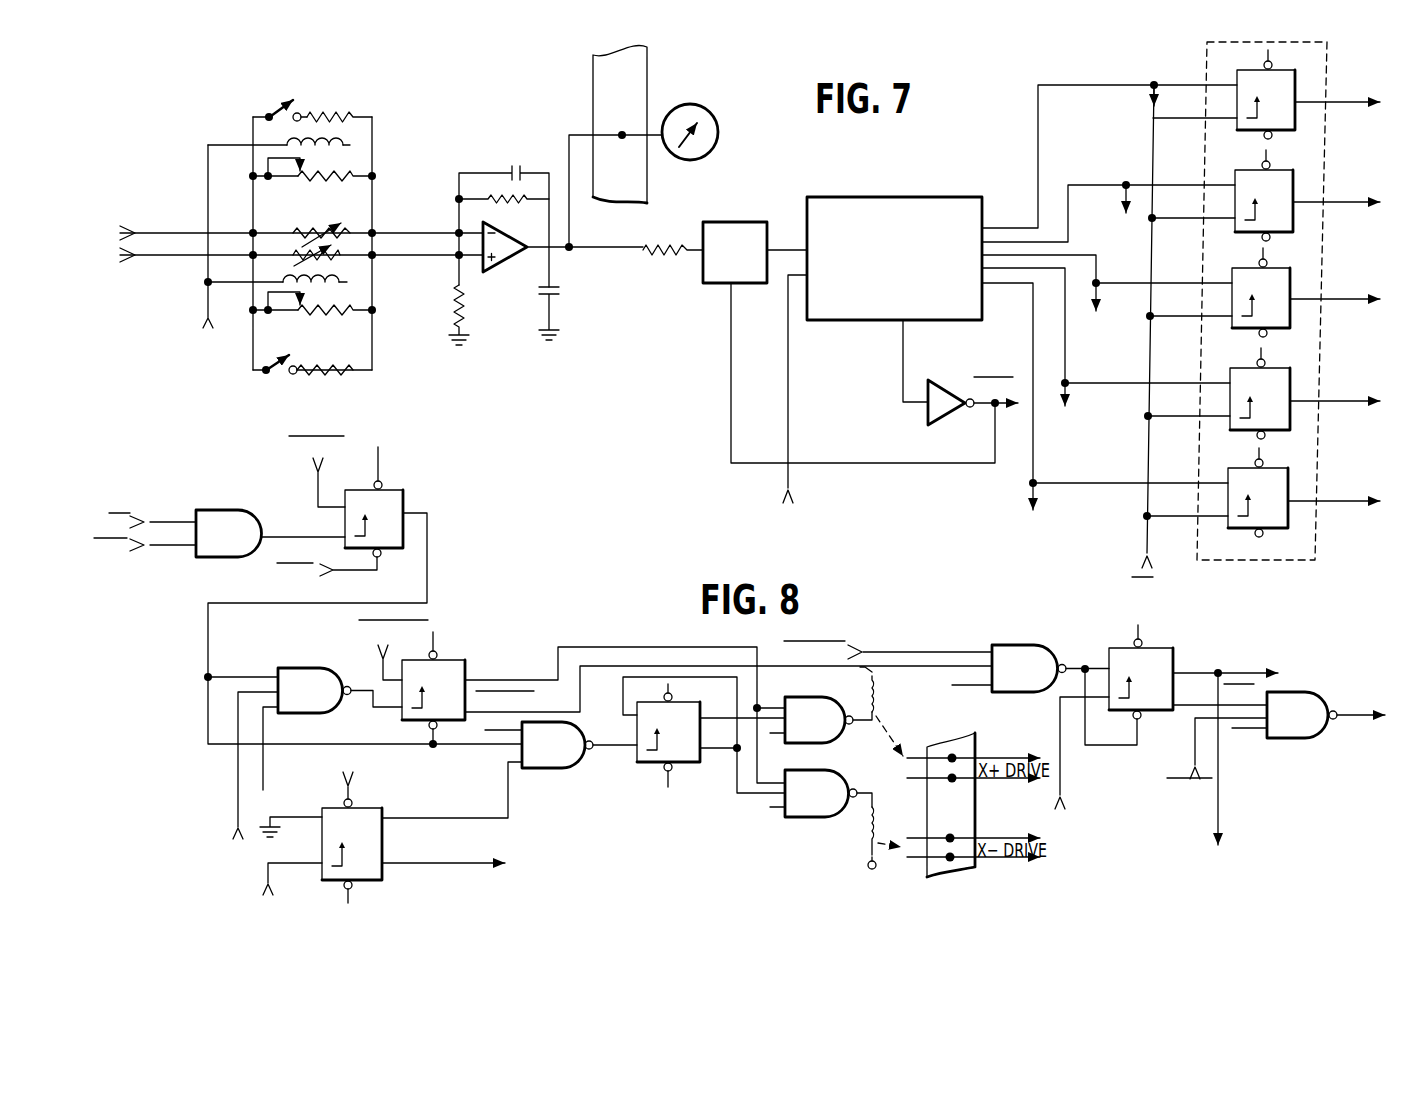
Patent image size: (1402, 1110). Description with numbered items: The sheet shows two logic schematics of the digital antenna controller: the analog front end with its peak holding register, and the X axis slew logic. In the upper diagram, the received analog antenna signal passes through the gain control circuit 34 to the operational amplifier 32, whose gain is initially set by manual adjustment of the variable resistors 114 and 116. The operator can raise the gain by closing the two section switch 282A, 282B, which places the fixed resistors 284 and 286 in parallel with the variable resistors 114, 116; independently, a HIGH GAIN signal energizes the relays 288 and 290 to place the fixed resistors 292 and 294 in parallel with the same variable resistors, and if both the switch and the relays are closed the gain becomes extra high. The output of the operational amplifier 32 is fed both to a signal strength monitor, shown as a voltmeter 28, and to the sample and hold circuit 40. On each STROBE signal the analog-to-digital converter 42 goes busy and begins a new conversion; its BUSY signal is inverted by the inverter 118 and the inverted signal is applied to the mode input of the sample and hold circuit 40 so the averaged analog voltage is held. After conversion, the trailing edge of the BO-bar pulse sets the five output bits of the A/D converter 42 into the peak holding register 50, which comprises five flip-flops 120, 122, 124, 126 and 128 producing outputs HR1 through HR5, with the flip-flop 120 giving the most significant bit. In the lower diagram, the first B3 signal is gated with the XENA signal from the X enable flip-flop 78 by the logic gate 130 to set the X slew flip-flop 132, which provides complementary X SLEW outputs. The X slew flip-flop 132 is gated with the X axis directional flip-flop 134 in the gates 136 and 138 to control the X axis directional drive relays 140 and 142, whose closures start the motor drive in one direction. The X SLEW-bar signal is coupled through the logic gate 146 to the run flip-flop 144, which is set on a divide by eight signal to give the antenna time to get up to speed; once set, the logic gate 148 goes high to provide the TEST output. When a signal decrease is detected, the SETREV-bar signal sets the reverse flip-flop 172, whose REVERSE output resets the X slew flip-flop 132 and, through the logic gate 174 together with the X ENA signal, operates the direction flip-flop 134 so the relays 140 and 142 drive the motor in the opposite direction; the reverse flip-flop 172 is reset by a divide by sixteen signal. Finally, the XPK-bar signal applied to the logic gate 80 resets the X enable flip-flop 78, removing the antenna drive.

In FIG. 7, the gain control circuit 34 is at (386, 155).
In FIG. 7, the two section switch 282A is at (278, 97).
In FIG. 7, the fixed resistor 284 is at (315, 117).
In FIG. 7, the relay 288 is at (249, 149).
In FIG. 7, the fixed resistor 292 is at (309, 180).
In FIG. 7, the variable resistor 114 is at (298, 233).
In FIG. 7, the variable resistor 116 is at (296, 255).
In FIG. 7, the relay 290 is at (250, 285).
In FIG. 7, the fixed resistor 294 is at (306, 313).
In FIG. 7, the two section switch 282B is at (295, 374).
In FIG. 7, the fixed resistor 286 is at (326, 372).
In FIG. 7, the operational amplifier 32 is at (511, 261).
In FIG. 7, the voltmeter 28 is at (718, 125).
In FIG. 7, the sample and hold circuit 40 is at (750, 222).
In FIG. 7, the analog-to-digital converter 42 is at (935, 197).
In FIG. 7, the inverter 118 is at (935, 380).
In FIG. 7, the peak holding register 50 is at (1330, 66).
In FIG. 7, the flip-flop 120 is at (1273, 138).
In FIG. 7, the flip-flop 122 is at (1271, 240).
In FIG. 7, the flip-flop 124 is at (1268, 336).
In FIG. 7, the flip-flop 126 is at (1266, 438).
In FIG. 7, the flip-flop 128 is at (1264, 536).
In FIG. 8, the logic gate 80 is at (222, 510).
In FIG. 8, the X enable flip-flop 78 is at (385, 490).
In FIG. 8, the logic gate 130 is at (325, 668).
In FIG. 8, the X slew flip-flop 132 is at (438, 660).
In FIG. 8, the logic gate 174 is at (573, 722).
In FIG. 8, the X axis directional flip-flop 134 is at (664, 697).
In FIG. 8, the logic gate 136 is at (805, 697).
In FIG. 8, the X axis directional drive relay 140 is at (887, 705).
In FIG. 8, the logic gate 138 is at (828, 770).
In FIG. 8, the X axis directional drive relay 142 is at (882, 855).
In FIG. 8, the logic gate 146 is at (1040, 645).
In FIG. 8, the run flip-flop 144 is at (1168, 648).
In FIG. 8, the logic gate 148 is at (1312, 692).
In FIG. 8, the reverse flip-flop 172 is at (368, 806).